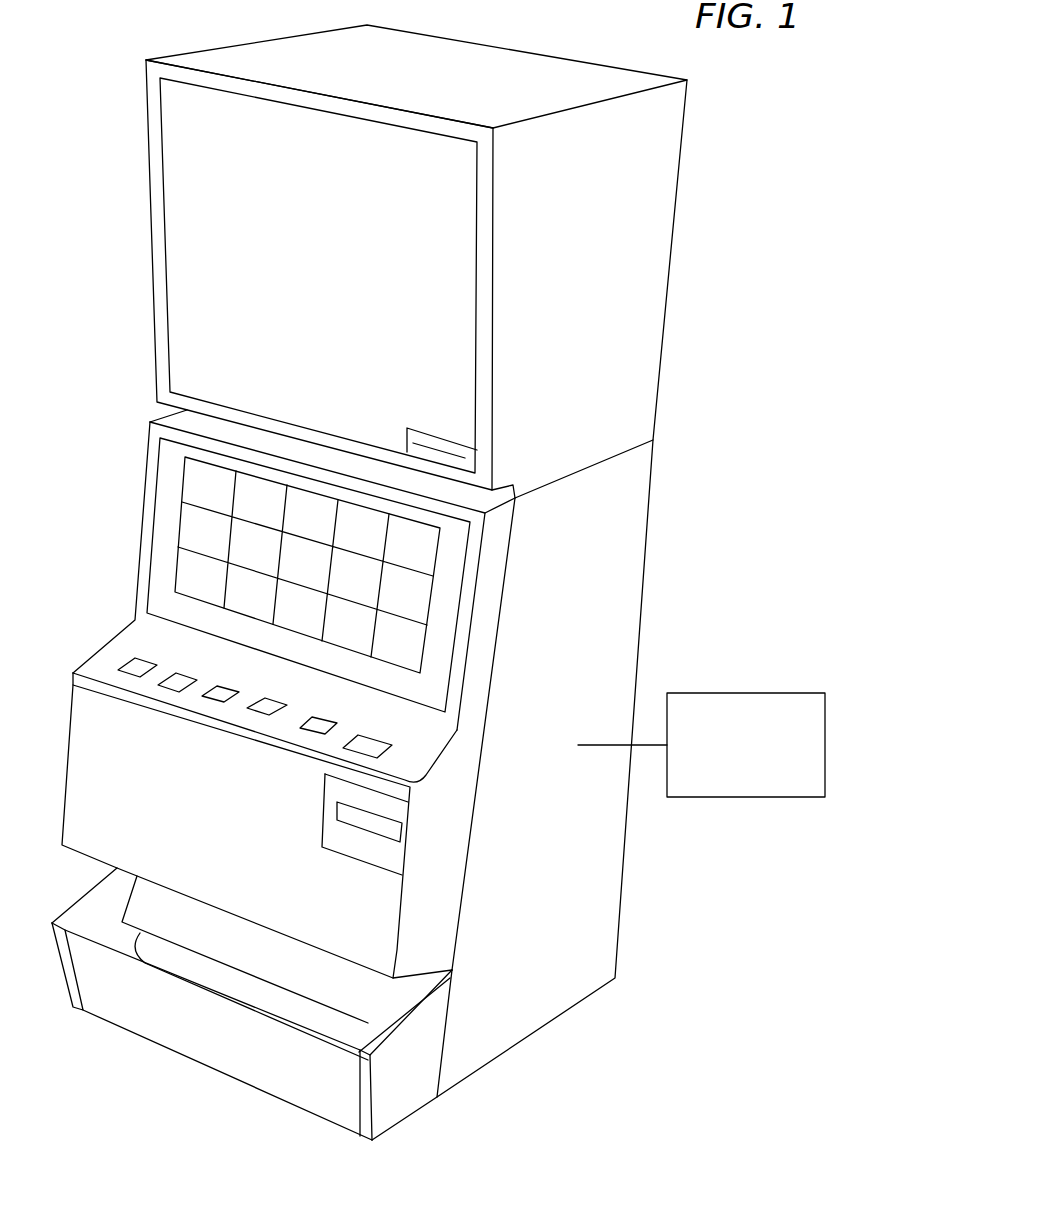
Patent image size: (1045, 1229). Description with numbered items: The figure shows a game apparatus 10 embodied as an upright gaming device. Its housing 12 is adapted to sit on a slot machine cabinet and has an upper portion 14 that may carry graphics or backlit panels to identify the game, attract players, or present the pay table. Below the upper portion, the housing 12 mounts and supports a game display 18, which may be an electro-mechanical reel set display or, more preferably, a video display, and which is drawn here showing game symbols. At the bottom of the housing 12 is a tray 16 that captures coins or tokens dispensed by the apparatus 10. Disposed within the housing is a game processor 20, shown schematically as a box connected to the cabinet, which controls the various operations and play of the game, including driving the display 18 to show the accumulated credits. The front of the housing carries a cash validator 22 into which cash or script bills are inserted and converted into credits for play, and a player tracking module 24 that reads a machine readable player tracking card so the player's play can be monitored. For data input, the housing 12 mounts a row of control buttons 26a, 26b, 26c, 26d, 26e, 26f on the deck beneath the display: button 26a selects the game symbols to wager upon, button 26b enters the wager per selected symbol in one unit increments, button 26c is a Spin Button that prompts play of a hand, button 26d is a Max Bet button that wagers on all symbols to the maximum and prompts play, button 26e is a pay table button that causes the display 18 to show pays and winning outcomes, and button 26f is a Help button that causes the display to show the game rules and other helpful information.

The game apparatus 10 is at (702, 88).
The housing 12 is at (623, 498).
The upper portion 14 is at (628, 275).
The tray 16 is at (410, 1072).
The game display 18 is at (447, 583).
The game processor 20 is at (743, 693).
The cash validator 22 is at (380, 847).
The player tracking module 24 is at (433, 437).
The control button 26a is at (137, 667).
The control button 26b is at (178, 676).
The Spin Button 26c is at (195, 695).
The Max Bet button 26d is at (250, 707).
The pay table button 26e is at (300, 712).
The Help button 26f is at (350, 738).